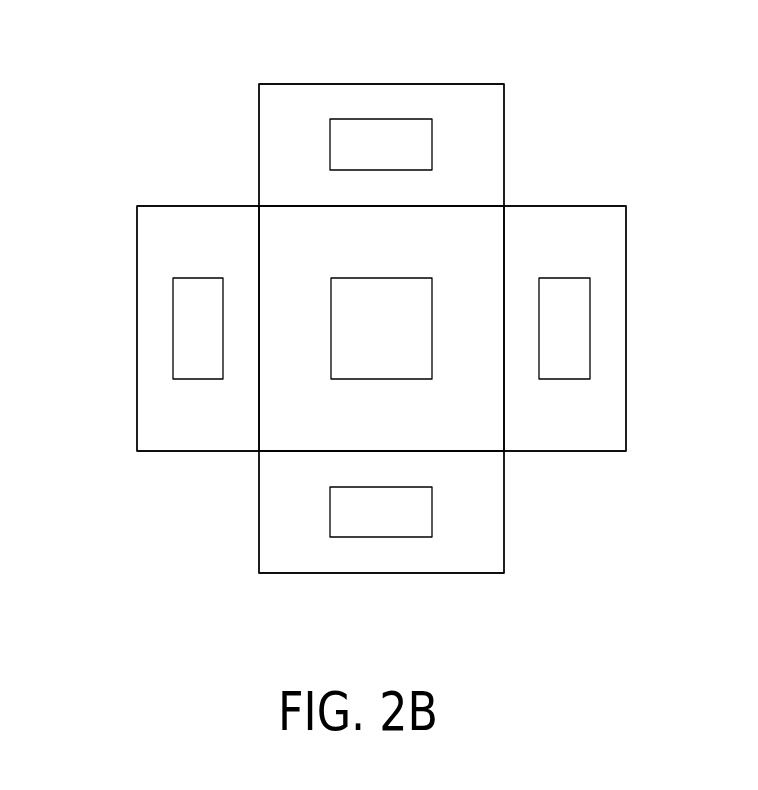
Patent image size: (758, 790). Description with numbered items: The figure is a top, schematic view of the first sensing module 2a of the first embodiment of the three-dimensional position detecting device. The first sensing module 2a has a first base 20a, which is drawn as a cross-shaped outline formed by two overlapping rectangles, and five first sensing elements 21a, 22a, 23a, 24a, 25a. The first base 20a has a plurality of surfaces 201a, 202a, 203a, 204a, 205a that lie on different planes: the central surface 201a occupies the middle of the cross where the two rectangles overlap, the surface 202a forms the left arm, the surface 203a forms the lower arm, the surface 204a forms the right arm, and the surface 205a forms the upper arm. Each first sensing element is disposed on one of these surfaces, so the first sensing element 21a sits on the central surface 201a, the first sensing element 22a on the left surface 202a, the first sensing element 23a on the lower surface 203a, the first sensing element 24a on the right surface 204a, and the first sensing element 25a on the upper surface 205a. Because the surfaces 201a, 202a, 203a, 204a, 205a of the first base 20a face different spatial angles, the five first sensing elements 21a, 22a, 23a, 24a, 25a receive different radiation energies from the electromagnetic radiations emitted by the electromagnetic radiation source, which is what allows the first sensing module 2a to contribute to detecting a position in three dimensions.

The first sensing module 2a is at (144, 70).
The first base 20a is at (627, 247).
The surface of the first base 201a is at (468, 427).
The surface of the first base 202a is at (202, 230).
The surface of the first base 203a is at (298, 513).
The surface of the first base 204a is at (610, 327).
The surface of the first base 205a is at (482, 145).
The first sensing element 21a is at (403, 339).
The first sensing element 22a is at (221, 339).
The first sensing element 23a is at (403, 526).
The first sensing element 24a is at (588, 339).
The first sensing element 25a is at (403, 156).